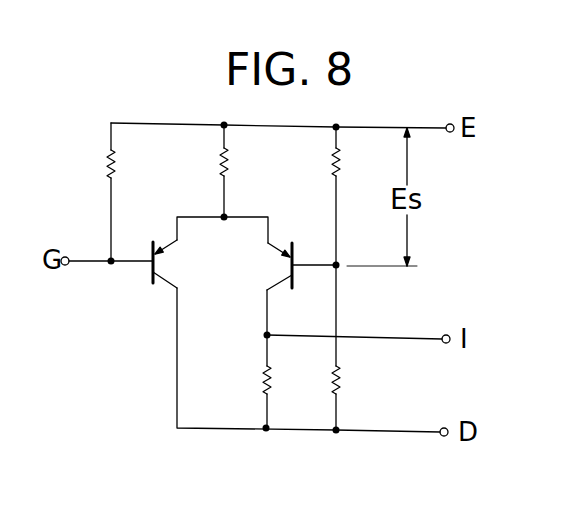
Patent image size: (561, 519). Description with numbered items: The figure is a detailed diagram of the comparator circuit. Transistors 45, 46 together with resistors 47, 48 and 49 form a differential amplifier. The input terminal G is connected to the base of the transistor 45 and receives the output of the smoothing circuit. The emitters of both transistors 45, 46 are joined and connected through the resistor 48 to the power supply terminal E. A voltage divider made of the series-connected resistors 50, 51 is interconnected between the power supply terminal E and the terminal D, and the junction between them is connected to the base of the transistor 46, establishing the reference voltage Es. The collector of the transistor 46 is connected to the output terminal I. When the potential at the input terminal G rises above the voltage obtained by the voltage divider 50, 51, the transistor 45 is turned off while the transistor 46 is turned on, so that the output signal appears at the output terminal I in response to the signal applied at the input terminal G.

The transistor 45 is at (156, 261).
The transistor 46 is at (282, 268).
The resistor 47 is at (115, 165).
The resistor 48 is at (229, 164).
The resistor 49 is at (262, 379).
The resistor 50 is at (340, 164).
The resistor 51 is at (340, 380).